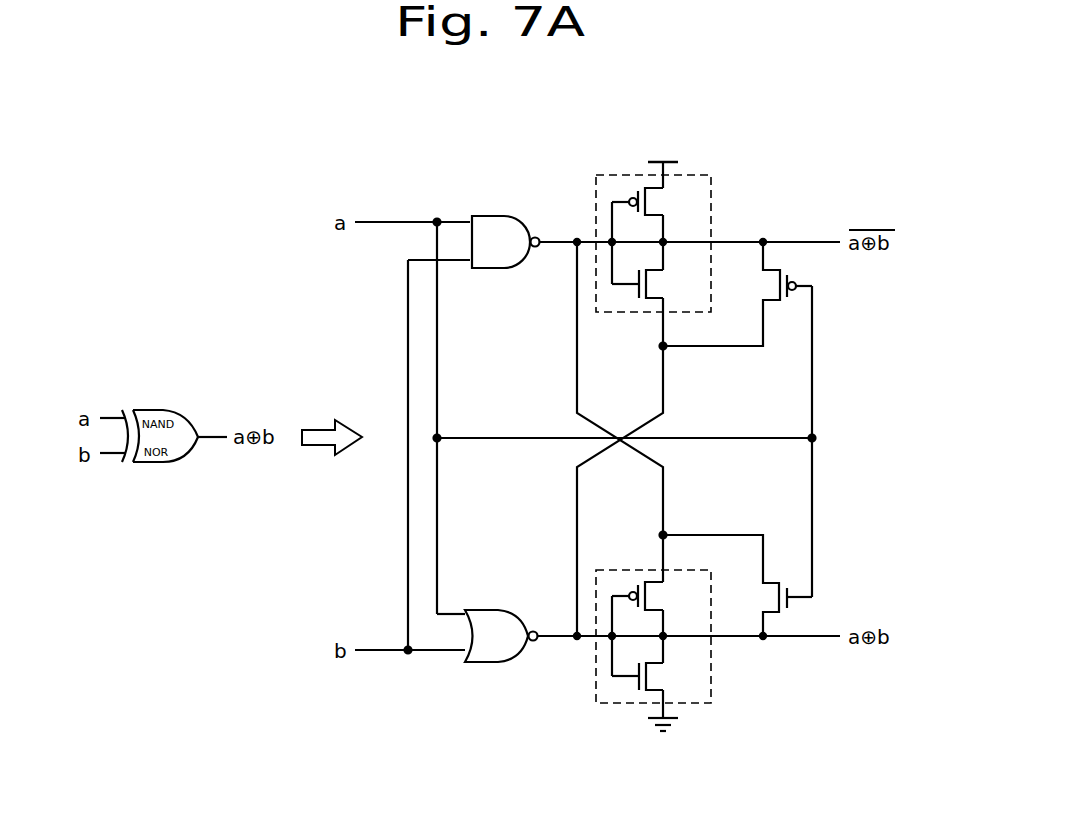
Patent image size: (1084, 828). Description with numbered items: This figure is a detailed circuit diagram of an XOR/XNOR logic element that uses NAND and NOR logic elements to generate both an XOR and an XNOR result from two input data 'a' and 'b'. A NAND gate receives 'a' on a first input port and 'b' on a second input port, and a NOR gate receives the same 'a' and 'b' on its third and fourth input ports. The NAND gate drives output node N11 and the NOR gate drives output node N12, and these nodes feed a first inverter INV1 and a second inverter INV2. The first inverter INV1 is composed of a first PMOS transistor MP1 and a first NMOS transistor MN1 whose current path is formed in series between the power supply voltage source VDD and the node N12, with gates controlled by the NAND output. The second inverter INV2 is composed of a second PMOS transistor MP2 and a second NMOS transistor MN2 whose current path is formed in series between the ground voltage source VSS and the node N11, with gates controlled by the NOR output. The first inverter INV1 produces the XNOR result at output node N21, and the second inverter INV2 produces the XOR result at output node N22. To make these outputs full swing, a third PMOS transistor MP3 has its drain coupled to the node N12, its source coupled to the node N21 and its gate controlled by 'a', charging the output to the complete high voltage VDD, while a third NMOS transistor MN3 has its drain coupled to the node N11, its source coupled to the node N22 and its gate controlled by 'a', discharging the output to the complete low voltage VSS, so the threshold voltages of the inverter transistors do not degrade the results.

The output node of the NAND gate N11 is at (576, 239).
The output node of the NOR gate N12 is at (576, 640).
The output node of the first inverter N21 is at (764, 239).
The output node of the second inverter N22 is at (764, 640).
The first inverter INV1 is at (618, 314).
The second inverter INV2 is at (615, 566).
The first PMOS transistor MP1 is at (653, 236).
The first NMOS transistor MN1 is at (655, 284).
The second PMOS transistor MP2 is at (653, 629).
The second NMOS transistor MN2 is at (655, 676).
The third PMOS transistor MP3 is at (736, 296).
The third NMOS transistor MN3 is at (736, 584).
The power supply voltage source VDD is at (663, 150).
The ground voltage source VSS is at (662, 740).